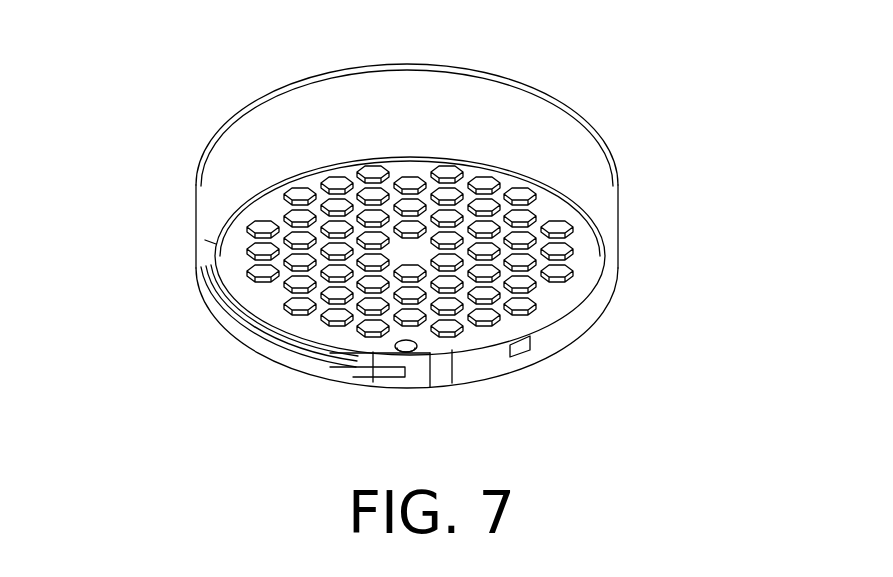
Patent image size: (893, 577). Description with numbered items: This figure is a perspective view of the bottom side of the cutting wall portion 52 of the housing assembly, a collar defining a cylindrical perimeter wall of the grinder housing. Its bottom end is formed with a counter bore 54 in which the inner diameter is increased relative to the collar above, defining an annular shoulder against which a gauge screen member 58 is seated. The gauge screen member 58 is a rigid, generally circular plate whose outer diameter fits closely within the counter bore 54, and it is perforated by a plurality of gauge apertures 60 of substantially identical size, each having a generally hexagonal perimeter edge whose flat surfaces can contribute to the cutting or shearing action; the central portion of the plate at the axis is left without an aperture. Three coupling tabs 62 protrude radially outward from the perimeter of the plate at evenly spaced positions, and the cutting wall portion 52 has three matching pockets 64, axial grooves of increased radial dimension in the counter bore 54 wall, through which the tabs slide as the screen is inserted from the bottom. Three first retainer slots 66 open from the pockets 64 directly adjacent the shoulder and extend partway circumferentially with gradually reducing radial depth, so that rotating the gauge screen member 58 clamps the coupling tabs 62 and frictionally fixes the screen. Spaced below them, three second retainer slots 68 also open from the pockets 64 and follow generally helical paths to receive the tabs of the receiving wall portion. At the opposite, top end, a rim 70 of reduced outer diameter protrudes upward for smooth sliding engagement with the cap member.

The cutting wall portion 52 is at (192, 181).
The counter bore 54 is at (478, 360).
The gauge screen member 58 is at (574, 269).
The gauge apertures 60 is at (480, 206).
The coupling tabs 62 is at (421, 357).
The pockets 64 is at (214, 241).
The first retainer slots 66 is at (300, 340).
The second retainer slots 68 is at (334, 368).
The rim 70 is at (429, 66).